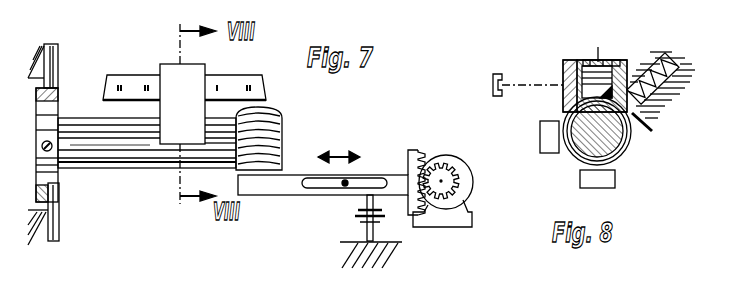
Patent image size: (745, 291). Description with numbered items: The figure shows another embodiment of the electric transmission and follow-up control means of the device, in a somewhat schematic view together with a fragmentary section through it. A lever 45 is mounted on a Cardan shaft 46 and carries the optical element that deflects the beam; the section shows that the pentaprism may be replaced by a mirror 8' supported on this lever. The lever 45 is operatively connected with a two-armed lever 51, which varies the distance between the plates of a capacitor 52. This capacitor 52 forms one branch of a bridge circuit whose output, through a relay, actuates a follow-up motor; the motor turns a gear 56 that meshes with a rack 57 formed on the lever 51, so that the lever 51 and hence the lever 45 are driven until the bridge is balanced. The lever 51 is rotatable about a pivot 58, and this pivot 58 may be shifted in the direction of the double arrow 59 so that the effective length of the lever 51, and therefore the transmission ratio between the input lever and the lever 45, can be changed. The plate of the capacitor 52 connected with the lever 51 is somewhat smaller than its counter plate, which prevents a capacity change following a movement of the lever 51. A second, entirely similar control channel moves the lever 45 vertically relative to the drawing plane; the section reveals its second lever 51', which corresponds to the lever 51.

In FIG. 7, the lever 45 is at (146, 152).
In FIG. 7, the Cardan shaft 46 is at (68, 181).
In FIG. 7, the two-armed lever 51 is at (323, 210).
In FIG. 8, the two-armed lever 51 is at (625, 202).
In FIG. 8, the second lever 51' is at (536, 168).
In FIG. 7, the capacitor 52 is at (378, 219).
In FIG. 7, the gear 56 is at (448, 179).
In FIG. 7, the rack 57 is at (413, 152).
In FIG. 7, the pivot 58 is at (350, 184).
In FIG. 7, the arrow 59 is at (328, 146).
In FIG. 8, the mirror 8' is at (629, 88).